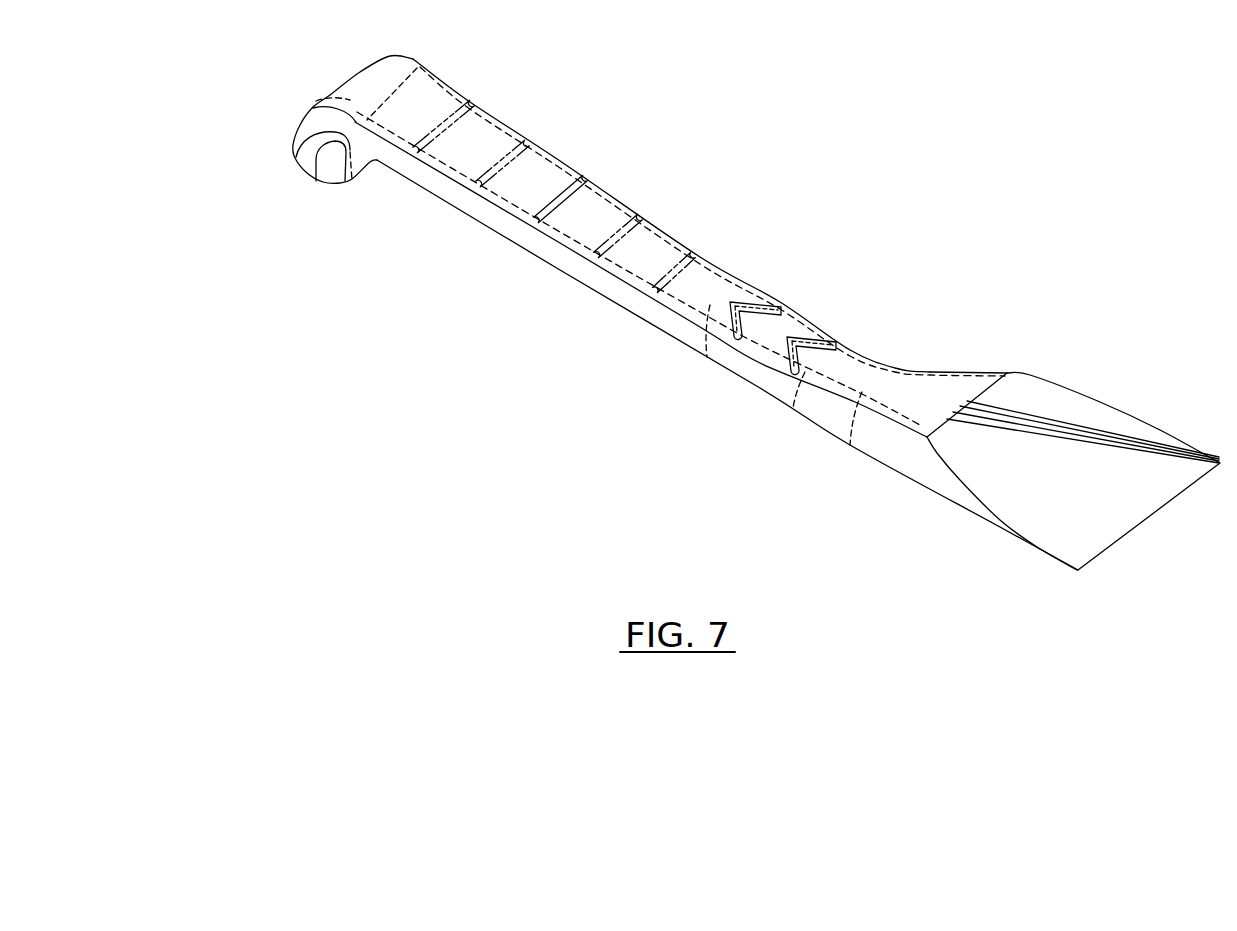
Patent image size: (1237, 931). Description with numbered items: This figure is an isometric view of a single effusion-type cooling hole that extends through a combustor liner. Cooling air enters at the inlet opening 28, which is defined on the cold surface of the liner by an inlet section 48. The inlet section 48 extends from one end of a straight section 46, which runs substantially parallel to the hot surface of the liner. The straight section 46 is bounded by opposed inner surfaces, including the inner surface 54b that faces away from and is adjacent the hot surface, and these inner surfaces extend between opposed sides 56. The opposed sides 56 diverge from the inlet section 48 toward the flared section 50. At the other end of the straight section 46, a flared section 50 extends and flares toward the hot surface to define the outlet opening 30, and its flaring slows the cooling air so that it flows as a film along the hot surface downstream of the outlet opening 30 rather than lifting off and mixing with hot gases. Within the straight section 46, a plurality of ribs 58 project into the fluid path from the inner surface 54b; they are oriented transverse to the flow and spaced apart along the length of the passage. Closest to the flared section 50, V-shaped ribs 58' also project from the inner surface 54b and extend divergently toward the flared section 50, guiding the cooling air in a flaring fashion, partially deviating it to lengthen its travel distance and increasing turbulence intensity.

The inlet opening 28 is at (312, 178).
The outlet opening 30 is at (1120, 500).
The straight section 46 is at (563, 160).
The inlet section 48 is at (300, 127).
The flared section 50 is at (962, 370).
The inner surface 54b is at (713, 290).
The opposed sides 56 is at (683, 233).
The ribs 58 is at (554, 162).
The V-shaped ribs 58' is at (834, 332).